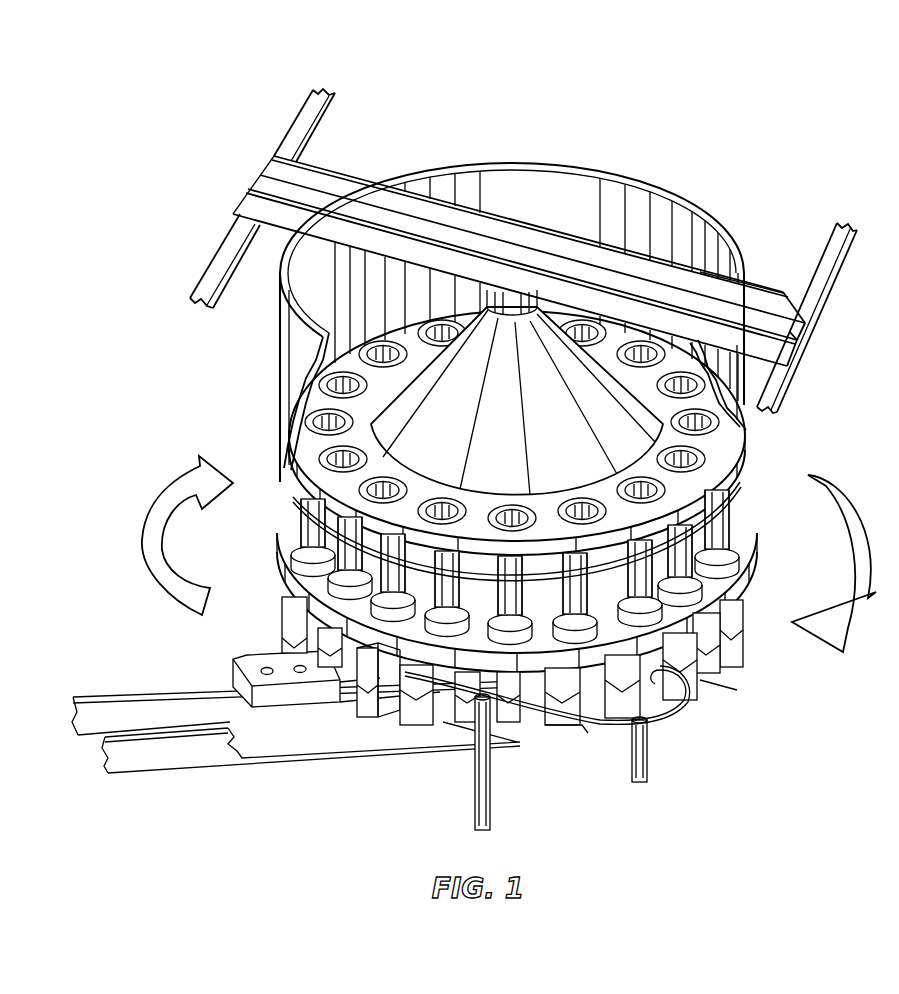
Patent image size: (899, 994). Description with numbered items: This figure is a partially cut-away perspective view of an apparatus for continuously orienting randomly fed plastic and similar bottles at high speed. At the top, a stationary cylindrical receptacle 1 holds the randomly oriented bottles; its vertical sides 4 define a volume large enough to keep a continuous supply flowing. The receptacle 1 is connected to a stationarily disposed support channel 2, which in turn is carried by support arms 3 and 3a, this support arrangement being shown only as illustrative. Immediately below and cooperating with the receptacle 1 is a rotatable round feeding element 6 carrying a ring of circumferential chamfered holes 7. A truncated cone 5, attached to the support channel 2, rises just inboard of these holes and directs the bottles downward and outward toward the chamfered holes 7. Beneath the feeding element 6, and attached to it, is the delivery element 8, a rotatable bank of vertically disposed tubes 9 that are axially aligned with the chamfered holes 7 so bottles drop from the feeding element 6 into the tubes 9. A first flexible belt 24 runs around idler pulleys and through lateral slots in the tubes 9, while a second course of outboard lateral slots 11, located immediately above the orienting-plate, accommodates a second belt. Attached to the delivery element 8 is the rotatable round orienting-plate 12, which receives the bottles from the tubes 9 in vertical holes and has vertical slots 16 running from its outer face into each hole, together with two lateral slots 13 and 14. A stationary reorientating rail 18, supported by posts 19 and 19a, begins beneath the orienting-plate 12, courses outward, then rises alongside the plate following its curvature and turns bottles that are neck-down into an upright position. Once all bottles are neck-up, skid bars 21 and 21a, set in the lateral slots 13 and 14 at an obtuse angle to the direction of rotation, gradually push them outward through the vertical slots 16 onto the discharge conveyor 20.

The receptacle 1 is at (588, 167).
The support channel 2 is at (752, 300).
The support arm 3 is at (832, 266).
The support arm 3a is at (287, 130).
The vertical sides of receptacle 4 is at (452, 178).
The cone 5 is at (540, 362).
The feeding element 6 is at (752, 466).
The chamfered holes 7 is at (692, 383).
The delivery element 8 is at (737, 592).
The tubes 9 is at (722, 545).
The outboard lateral slots 11 is at (282, 603).
The orienting-plate 12 is at (743, 642).
The lateral slot 13 is at (741, 630).
The lateral slot 14 is at (740, 660).
The vertical slots 16 is at (577, 727).
The reorientating rail 18 is at (602, 720).
The post 19 is at (648, 771).
The post 19a is at (473, 822).
The discharge conveyor 20 is at (267, 748).
The skid bar 21 is at (310, 663).
The skid bar 21a is at (273, 693).
The first flexible belt 24 is at (343, 550).